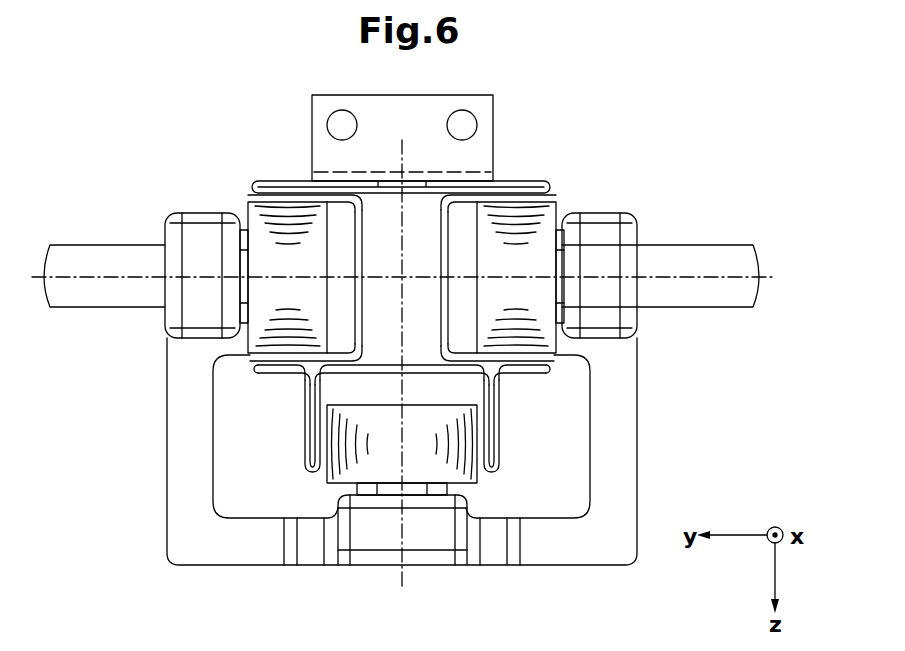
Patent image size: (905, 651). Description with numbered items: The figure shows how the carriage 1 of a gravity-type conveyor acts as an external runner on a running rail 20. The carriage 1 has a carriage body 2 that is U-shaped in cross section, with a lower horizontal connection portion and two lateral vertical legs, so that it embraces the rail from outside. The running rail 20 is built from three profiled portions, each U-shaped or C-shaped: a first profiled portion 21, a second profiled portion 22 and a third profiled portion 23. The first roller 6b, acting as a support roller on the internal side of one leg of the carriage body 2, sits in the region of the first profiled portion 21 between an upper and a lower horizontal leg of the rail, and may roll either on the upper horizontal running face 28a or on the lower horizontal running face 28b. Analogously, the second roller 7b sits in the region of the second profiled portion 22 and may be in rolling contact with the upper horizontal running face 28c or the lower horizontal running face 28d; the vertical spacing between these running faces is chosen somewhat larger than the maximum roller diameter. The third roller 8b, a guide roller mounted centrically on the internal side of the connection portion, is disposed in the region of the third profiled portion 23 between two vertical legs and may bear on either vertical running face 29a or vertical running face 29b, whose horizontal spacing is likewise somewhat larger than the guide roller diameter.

The carriage 1 is at (133, 424).
The carriage body 2 is at (675, 462).
The first roller 6b is at (545, 218).
The second roller 7b is at (257, 213).
The third roller 8b is at (347, 458).
The running rail 20 is at (287, 155).
The first profiled portion 21 is at (464, 219).
The second profiled portion 22 is at (338, 215).
The third profiled portion 23 is at (460, 385).
The upper horizontal running face 28a is at (515, 196).
The lower horizontal running face 28b is at (520, 359).
The upper horizontal running face 28c is at (292, 197).
The lower horizontal running face 28d is at (293, 357).
The vertical running face 29a is at (482, 437).
The vertical running face 29b is at (322, 430).